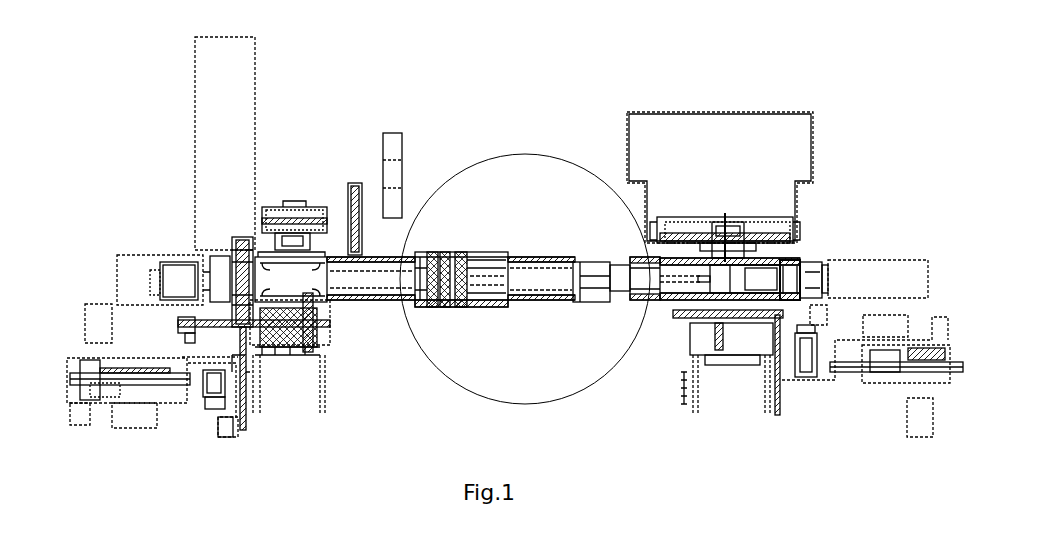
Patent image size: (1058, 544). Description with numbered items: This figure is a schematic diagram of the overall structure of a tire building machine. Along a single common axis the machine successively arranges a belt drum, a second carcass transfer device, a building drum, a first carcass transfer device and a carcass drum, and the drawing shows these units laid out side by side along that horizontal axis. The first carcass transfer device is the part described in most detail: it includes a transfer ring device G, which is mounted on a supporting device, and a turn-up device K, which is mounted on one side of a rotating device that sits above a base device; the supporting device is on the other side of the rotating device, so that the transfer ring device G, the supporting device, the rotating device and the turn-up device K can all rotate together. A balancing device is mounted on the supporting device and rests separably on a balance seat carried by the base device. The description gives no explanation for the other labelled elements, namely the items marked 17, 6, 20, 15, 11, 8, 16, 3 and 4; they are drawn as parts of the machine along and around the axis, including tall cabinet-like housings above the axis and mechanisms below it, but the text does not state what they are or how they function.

The tall cabinet / hopper 17 is at (213, 178).
The valve assembly 6 is at (278, 208).
The end box 20 is at (135, 267).
The support column 15 is at (207, 247).
The chamber 11 is at (327, 284).
The transfer ring device G is at (447, 253).
The tube section 8 is at (490, 253).
The hopper 16 is at (770, 157).
The slide assembly 3 is at (760, 233).
The block 4 is at (737, 273).
The turn-up device K is at (808, 273).